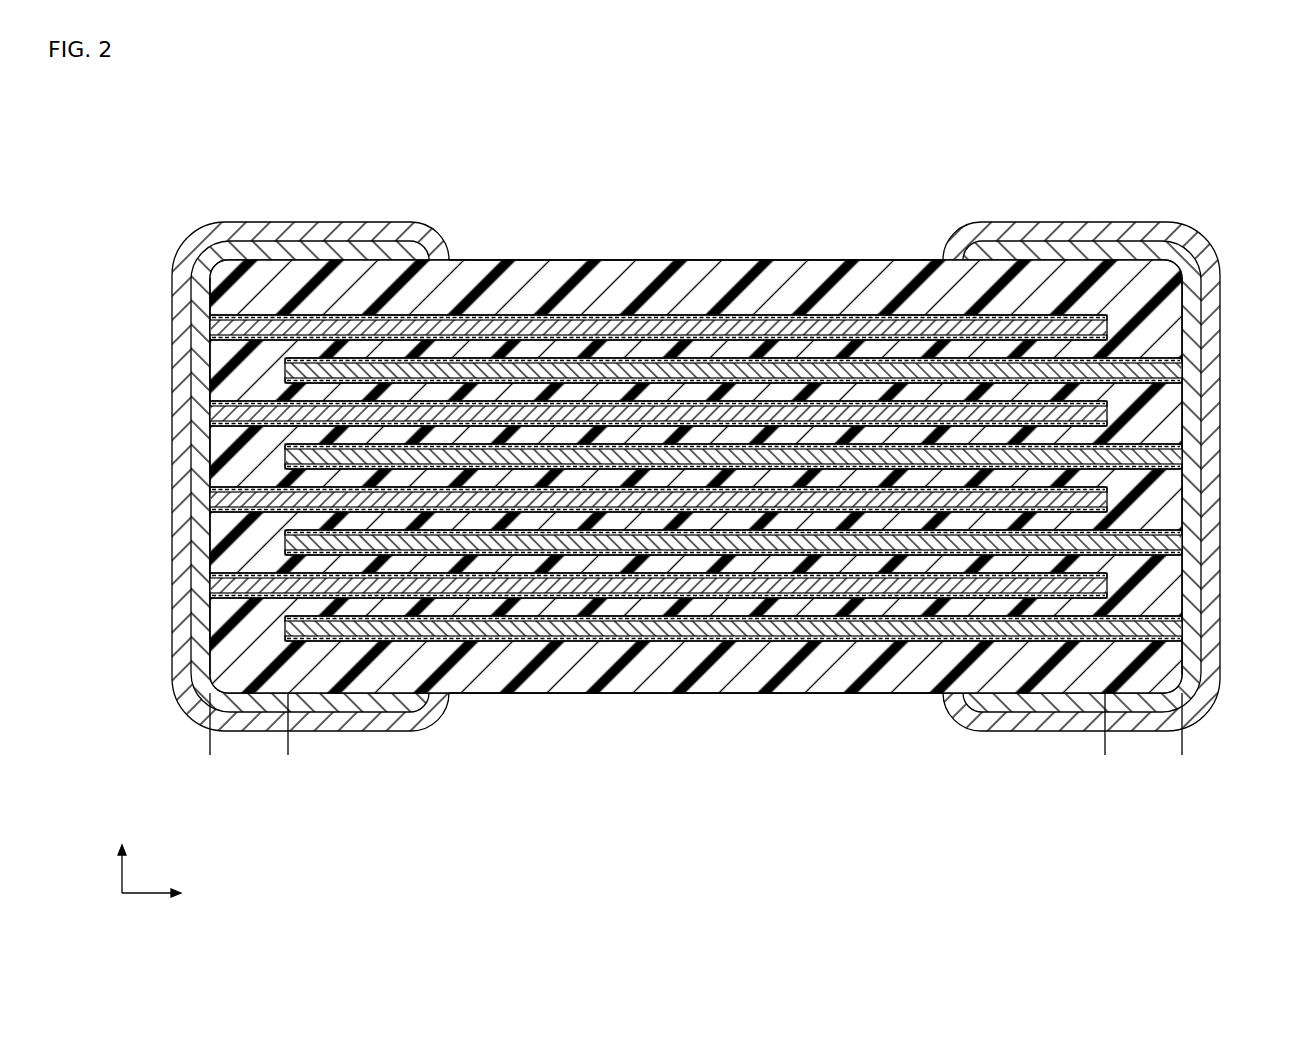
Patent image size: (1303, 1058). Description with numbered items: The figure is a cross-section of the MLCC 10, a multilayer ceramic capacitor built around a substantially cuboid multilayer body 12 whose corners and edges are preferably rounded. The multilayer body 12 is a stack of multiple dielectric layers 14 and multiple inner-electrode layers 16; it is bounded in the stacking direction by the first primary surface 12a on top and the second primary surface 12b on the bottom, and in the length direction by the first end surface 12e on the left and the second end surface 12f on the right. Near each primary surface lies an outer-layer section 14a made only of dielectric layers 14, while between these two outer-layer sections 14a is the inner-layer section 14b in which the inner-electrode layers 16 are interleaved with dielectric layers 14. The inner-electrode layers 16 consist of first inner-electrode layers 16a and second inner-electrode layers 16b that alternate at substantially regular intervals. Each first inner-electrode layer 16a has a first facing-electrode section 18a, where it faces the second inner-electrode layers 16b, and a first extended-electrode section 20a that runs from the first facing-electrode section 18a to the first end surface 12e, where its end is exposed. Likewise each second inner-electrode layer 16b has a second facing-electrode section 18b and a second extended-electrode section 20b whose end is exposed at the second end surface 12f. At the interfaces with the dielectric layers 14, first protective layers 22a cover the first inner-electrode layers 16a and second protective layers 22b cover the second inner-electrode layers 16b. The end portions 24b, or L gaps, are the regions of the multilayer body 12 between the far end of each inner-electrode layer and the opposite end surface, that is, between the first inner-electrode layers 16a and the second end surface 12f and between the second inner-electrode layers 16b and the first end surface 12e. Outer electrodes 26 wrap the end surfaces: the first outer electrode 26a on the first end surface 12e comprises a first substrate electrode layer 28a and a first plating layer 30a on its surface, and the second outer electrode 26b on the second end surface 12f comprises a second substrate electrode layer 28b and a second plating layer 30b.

The MLCC 10 is at (152, 183).
The multilayer body 12 is at (695, 529).
The first primary surface 12a is at (867, 260).
The second primary surface 12b is at (905, 693).
The first end surface 12e is at (208, 468).
The second end surface 12f is at (1183, 500).
The dielectric layers 14 is at (696, 472).
The outer-layer sections 14a is at (735, 302).
The inner-layer section 14b is at (825, 430).
The inner-electrode layers 16 is at (383, 822).
The first inner-electrode layers 16a is at (607, 522).
The second inner-electrode layers 16b is at (784, 561).
The first facing-electrode section 18a is at (590, 417).
The second facing-electrode section 18b is at (657, 453).
The first extended-electrode section 20a is at (238, 413).
The second extended-electrode section 20b is at (1163, 375).
The first protective layers 22a is at (247, 317).
The second protective layers 22b is at (1152, 358).
The end portions (L gaps) 24b is at (288, 762).
The outer electrodes 26 is at (672, 822).
The first outer electrode 26a is at (363, 157).
The second outer electrode 26b is at (1168, 160).
The first substrate electrode layer 28a is at (257, 248).
The second substrate electrode layer 28b is at (1057, 253).
The first plating layer 30a is at (327, 230).
The second plating layer 30b is at (1130, 232).